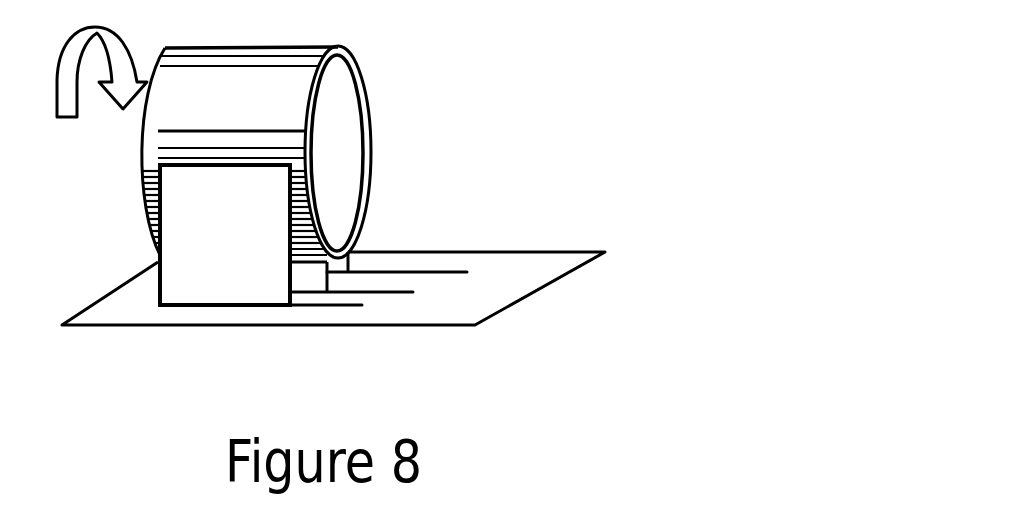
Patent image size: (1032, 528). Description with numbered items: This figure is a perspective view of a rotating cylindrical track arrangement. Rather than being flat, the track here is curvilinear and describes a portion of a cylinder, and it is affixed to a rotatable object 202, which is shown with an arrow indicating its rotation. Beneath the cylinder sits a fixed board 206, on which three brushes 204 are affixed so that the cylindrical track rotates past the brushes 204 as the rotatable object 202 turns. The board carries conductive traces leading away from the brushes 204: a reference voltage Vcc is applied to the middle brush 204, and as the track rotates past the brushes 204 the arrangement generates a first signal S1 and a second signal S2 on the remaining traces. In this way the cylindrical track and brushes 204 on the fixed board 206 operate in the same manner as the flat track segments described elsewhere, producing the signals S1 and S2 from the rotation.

The rotatable object 202 is at (338, 85).
The brushes 204 is at (240, 293).
The fixed board 206 is at (535, 242).
The first signal S1 is at (347, 303).
The second signal S2 is at (455, 272).
The reference voltage Vcc is at (403, 300).